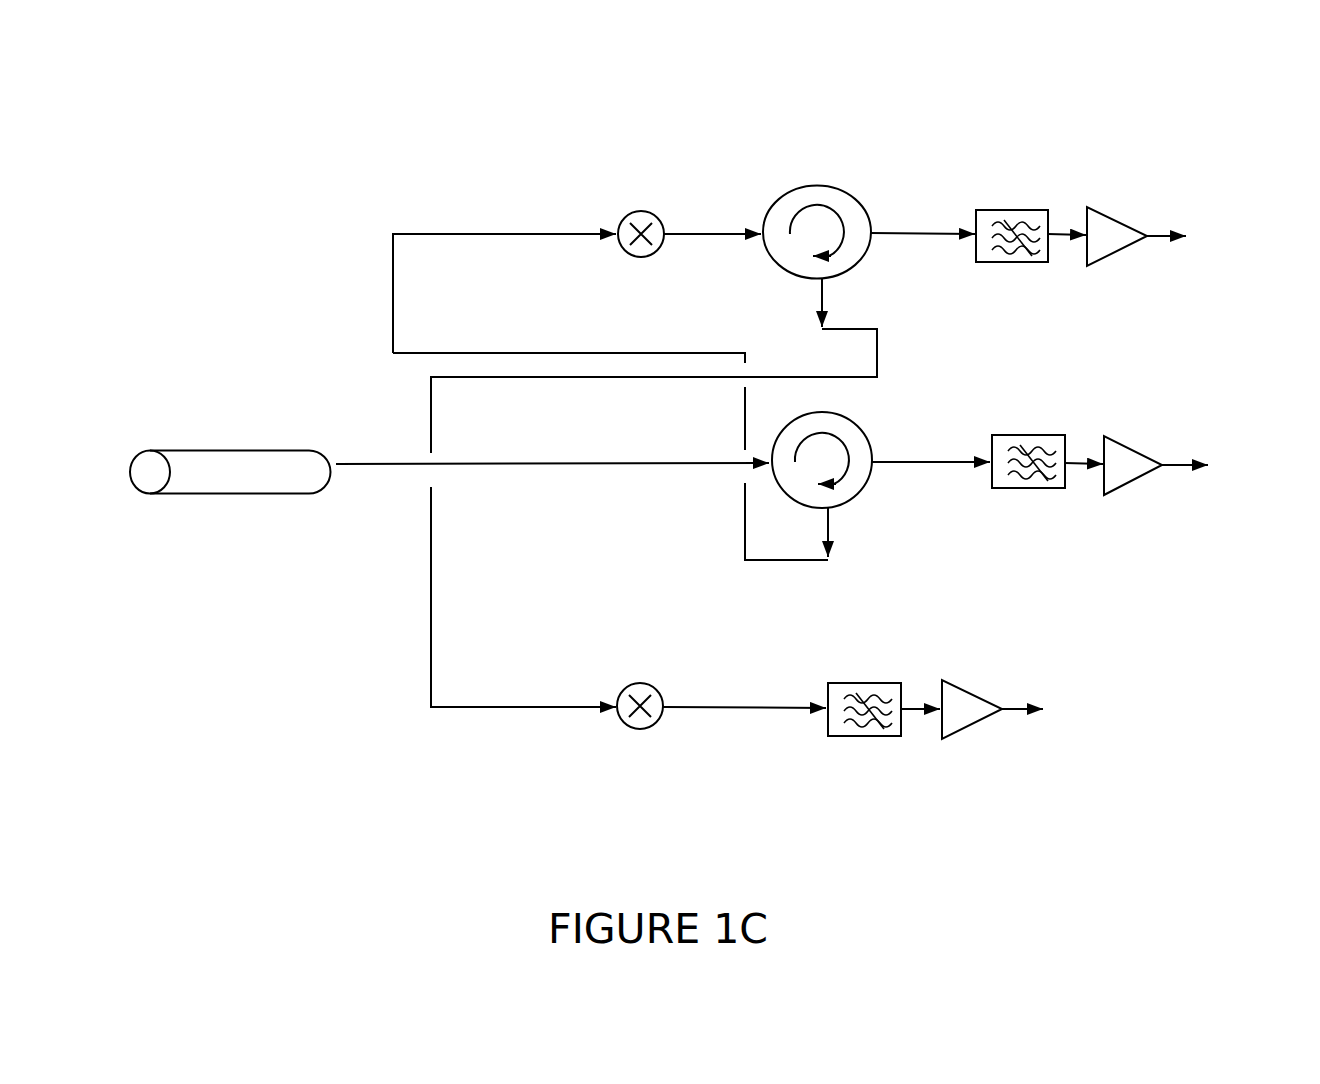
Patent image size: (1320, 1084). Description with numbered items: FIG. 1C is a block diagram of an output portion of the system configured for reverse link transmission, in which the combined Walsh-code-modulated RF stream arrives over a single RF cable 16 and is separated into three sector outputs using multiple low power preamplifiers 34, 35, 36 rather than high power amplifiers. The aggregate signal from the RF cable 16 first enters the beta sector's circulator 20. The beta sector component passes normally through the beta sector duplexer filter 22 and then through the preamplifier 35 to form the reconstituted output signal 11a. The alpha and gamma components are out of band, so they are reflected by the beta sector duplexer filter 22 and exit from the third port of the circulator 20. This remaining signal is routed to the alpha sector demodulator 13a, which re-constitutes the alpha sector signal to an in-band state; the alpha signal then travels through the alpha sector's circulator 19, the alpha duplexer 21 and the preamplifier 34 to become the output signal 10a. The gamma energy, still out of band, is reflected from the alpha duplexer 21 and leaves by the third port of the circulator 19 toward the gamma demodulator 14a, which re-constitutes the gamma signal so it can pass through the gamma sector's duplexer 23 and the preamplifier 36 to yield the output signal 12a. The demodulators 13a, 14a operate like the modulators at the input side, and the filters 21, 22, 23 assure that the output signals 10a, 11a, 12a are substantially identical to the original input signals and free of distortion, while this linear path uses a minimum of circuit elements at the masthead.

The RF cable 16 is at (214, 446).
The alpha sector demodulator 13a is at (642, 209).
The gamma demodulator 14a is at (642, 731).
The alpha sector circulator 19 is at (825, 246).
The beta sector circulator 20 is at (832, 474).
The alpha duplexer 21 is at (1014, 207).
The beta sector duplexer filter 22 is at (1030, 494).
The gamma sector duplexer 23 is at (863, 740).
The low power preamplifier 34 is at (1118, 214).
The low power preamplifier 35 is at (1135, 494).
The low power preamplifier 36 is at (971, 731).
The reconstituted output signal 10a is at (1243, 251).
The reconstituted output signal 11a is at (1264, 478).
The reconstituted output signal 12a is at (1103, 723).